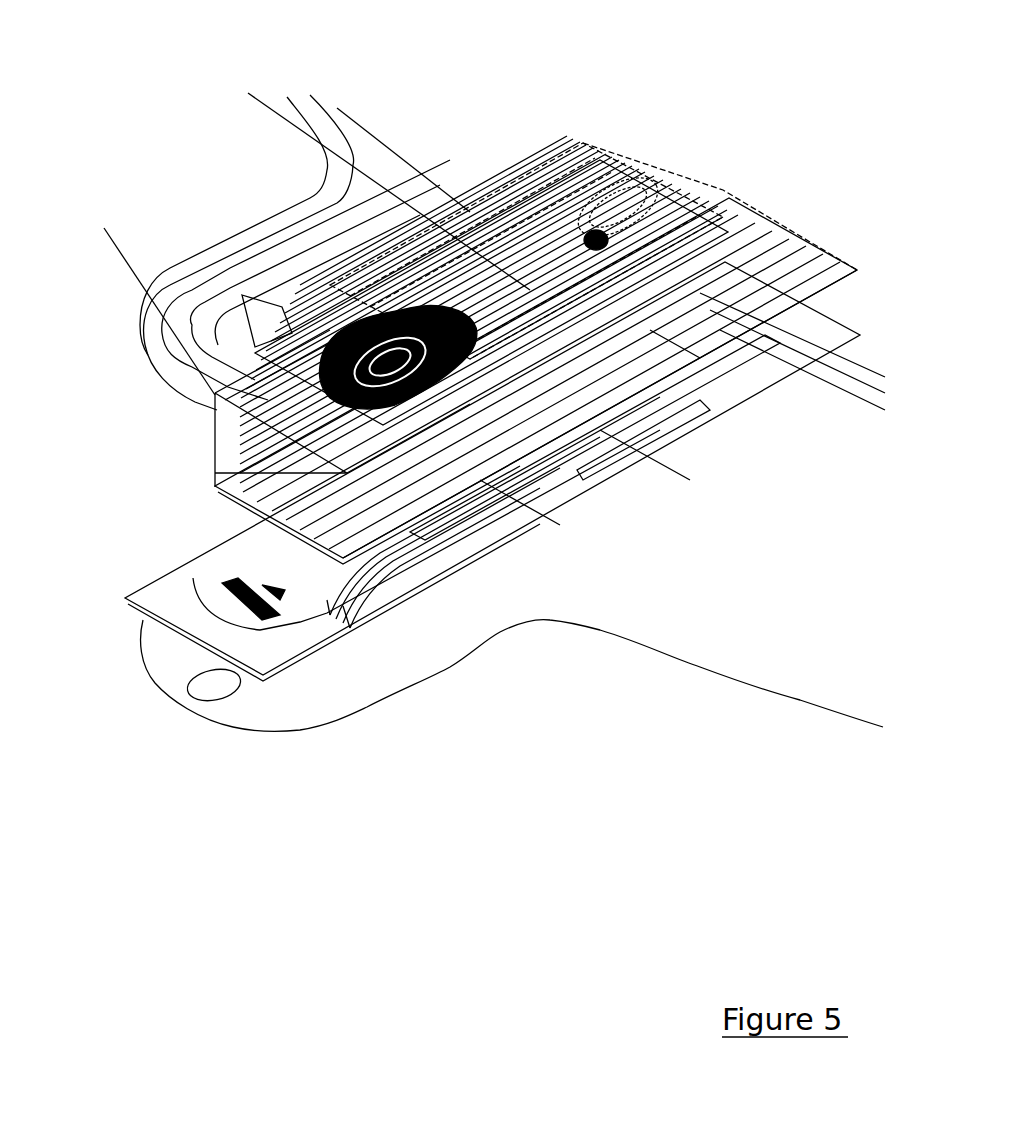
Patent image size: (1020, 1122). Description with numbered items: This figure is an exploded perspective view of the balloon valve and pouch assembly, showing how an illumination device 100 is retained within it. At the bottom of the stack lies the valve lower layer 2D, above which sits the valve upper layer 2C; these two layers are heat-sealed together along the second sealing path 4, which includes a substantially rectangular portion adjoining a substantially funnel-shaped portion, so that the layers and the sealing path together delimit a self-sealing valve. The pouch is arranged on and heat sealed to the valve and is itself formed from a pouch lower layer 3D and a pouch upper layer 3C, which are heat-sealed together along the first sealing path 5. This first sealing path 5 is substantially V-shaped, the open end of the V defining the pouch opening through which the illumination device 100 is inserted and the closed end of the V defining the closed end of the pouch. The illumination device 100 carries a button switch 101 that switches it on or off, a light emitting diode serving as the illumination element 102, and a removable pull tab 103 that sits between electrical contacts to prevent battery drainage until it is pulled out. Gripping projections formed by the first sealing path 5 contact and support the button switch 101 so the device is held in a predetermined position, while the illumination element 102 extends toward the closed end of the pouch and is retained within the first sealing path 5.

The illumination device 100 is at (352, 305).
The button switch 101 is at (398, 340).
The illumination element 102 is at (595, 235).
The removable pull tab 103 is at (218, 447).
The first sealing path 5 is at (635, 258).
The second sealing path 4 is at (373, 578).
The pouch upper layer 3C is at (255, 353).
The pouch lower layer 3D is at (232, 425).
The valve upper layer 2C is at (215, 486).
The valve lower layer 2D is at (168, 583).